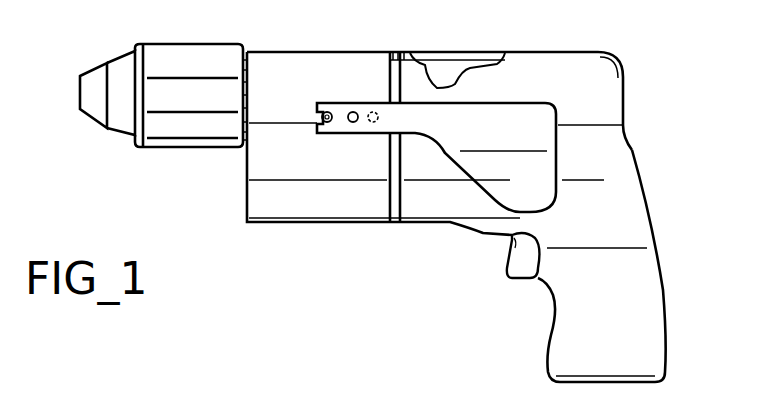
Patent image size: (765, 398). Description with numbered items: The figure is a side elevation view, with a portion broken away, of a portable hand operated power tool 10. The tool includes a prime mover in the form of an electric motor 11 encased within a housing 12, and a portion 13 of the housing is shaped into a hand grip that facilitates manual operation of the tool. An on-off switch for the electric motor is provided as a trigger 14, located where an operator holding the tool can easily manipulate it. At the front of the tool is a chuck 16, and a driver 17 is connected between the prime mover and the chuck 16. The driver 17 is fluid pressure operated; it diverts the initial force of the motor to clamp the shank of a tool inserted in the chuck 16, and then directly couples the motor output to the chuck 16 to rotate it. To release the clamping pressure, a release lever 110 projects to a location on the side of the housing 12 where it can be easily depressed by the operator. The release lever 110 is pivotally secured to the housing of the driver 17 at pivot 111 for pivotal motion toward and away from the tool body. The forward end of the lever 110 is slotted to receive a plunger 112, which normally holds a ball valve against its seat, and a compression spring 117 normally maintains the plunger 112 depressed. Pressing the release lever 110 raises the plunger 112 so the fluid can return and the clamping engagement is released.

The power tool 10 is at (426, 266).
The electric motor 11 is at (445, 72).
The housing 12 is at (523, 66).
The hand grip portion 13 is at (642, 287).
The trigger 14 is at (518, 268).
The chuck 16 is at (160, 56).
The driver 17 is at (321, 38).
The release lever 110 is at (558, 119).
The pivot 111 is at (375, 112).
The plunger 112 is at (320, 120).
The compression spring 117 is at (353, 112).